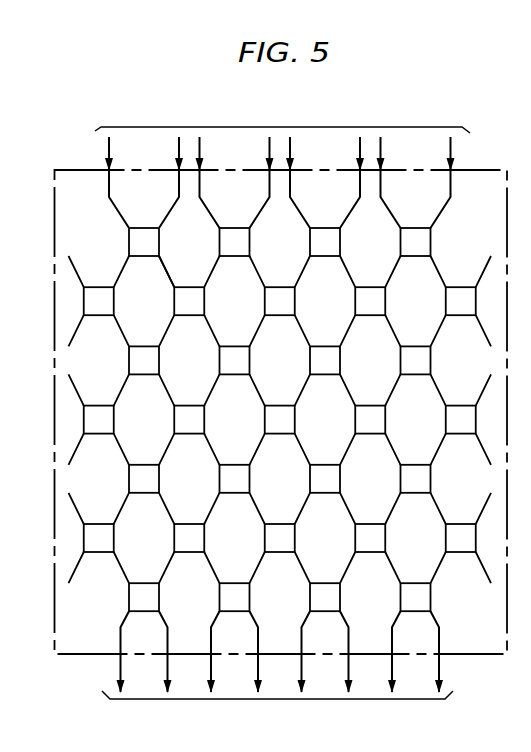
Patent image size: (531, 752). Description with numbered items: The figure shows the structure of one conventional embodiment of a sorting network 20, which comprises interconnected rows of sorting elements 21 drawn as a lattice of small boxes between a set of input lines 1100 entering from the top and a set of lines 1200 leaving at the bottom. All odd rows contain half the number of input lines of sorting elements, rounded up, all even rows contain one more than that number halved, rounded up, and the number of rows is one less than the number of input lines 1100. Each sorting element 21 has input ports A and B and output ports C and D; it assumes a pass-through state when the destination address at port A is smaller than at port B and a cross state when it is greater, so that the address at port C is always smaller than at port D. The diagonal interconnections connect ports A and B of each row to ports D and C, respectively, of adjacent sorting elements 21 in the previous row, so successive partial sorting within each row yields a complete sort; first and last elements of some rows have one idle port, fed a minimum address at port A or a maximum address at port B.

The sorting network 20 is at (472, 170).
The sorting element 21 is at (280, 402).
The input lines 1100 is at (282, 166).
The lines 1200 is at (277, 668).
The input port A is at (128, 212).
The input port B is at (162, 220).
The output port C is at (122, 270).
The output port D is at (170, 275).